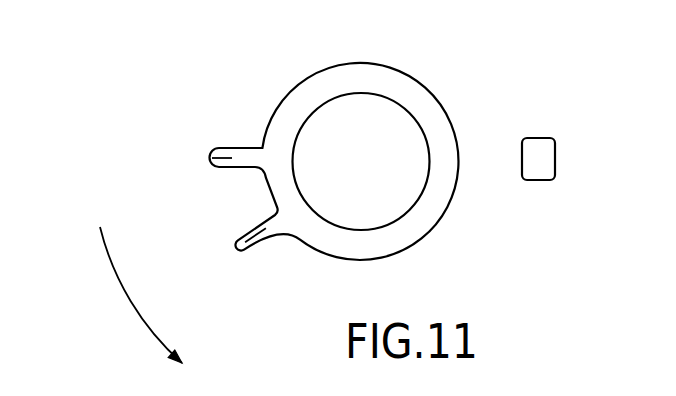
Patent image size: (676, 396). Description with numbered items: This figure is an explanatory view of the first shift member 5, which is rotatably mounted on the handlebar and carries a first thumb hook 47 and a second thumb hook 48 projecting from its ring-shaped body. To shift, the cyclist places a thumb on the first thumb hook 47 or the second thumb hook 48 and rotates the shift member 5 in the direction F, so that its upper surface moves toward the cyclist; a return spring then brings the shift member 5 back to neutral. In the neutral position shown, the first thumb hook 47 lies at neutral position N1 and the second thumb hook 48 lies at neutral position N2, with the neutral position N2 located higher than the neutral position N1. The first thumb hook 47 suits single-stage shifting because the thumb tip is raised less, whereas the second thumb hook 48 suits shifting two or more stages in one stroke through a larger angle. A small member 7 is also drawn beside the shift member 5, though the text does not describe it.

The first shift member 5 is at (292, 98).
The first thumb hook 47 is at (258, 240).
The second thumb hook 48 is at (218, 148).
The neutral position of the first thumb hook N1 is at (238, 246).
The neutral position of the second thumb hook N2 is at (209, 160).
The workpiece member 7 is at (548, 145).
The direction of rotation F is at (120, 282).